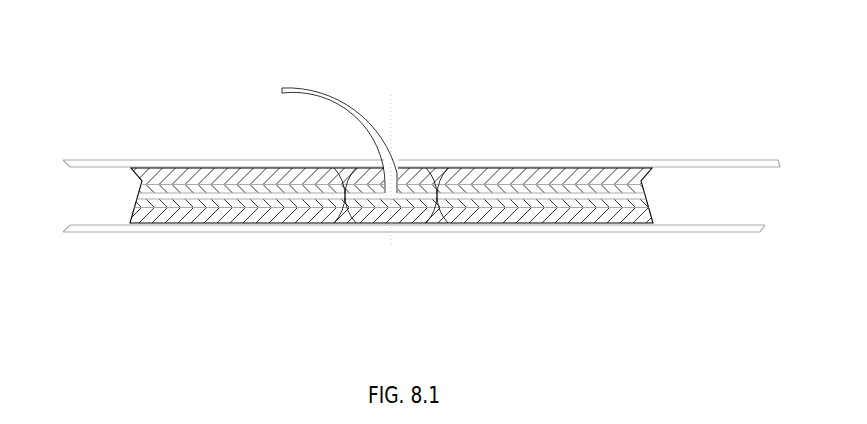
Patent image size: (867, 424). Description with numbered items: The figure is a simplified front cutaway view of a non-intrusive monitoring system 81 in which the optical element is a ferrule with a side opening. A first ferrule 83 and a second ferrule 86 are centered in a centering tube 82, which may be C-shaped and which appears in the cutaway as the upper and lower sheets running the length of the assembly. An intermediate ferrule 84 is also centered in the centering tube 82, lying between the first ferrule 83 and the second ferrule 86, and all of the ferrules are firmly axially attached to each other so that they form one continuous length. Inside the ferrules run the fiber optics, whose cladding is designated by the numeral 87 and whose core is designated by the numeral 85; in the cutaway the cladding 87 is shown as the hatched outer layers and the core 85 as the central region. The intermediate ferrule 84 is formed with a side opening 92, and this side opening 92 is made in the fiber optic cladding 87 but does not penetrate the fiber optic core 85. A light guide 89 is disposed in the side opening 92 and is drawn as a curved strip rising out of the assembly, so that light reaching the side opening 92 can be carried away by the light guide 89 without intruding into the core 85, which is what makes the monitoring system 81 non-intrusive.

The non-intrusive monitoring system 81 is at (185, 57).
The centering tube 82 is at (110, 165).
The first ferrule 83 is at (213, 217).
The intermediate ferrule 84 is at (373, 217).
The fiber optic core 85 is at (425, 190).
The second ferrule 86 is at (518, 217).
The fiber optic cladding 87 is at (318, 192).
The light guide 89 is at (342, 98).
The side opening 92 is at (391, 193).